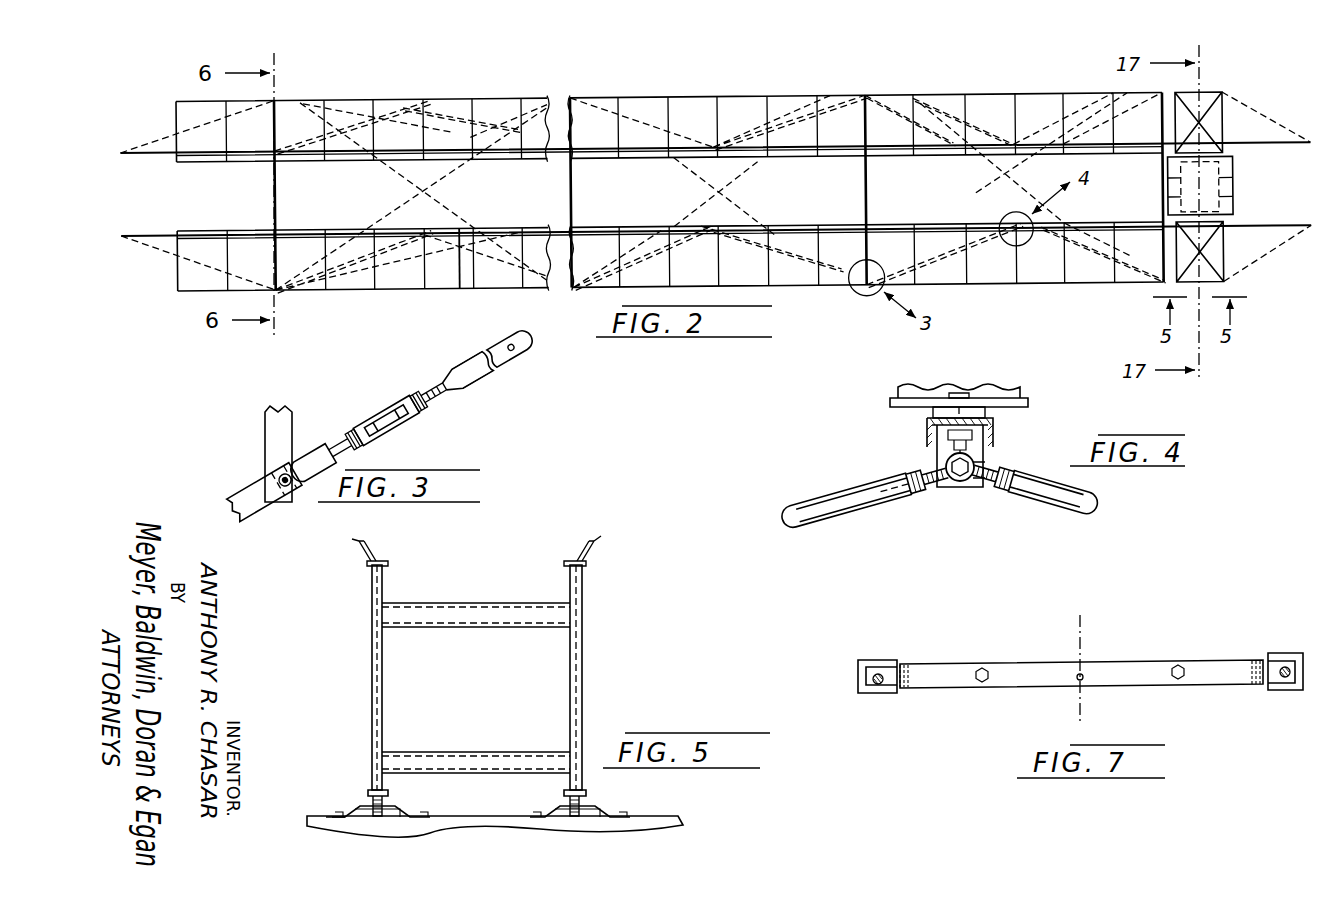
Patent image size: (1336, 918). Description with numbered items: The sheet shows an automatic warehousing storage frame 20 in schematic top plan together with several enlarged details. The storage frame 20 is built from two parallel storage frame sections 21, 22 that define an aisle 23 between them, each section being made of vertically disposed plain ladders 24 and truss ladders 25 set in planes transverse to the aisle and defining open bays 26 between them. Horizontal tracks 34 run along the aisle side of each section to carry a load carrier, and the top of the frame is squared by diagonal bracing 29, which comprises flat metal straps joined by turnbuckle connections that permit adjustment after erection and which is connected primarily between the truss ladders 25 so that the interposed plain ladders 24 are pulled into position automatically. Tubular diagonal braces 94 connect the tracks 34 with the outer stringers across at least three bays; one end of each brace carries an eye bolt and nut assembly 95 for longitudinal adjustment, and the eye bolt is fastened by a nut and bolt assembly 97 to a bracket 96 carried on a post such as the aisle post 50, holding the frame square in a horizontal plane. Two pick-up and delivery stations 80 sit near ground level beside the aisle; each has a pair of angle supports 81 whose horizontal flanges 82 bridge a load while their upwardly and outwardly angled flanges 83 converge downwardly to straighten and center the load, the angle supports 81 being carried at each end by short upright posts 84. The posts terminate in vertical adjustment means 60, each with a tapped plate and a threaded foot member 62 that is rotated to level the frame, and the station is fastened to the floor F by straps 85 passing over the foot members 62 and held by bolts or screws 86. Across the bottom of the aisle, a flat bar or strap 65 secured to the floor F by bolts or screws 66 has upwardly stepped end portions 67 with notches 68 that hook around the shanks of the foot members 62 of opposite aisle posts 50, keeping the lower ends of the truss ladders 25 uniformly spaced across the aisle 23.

In FIG. 2, the storage frame 20 is at (987, 88).
In FIG. 2, the storage frame section 21 is at (688, 100).
In FIG. 2, the storage frame section 22 is at (830, 287).
In FIG. 2, the aisle 23 is at (777, 190).
In FIG. 2, the ladder 24 is at (433, 118).
In FIG. 2, the truss ladder 25 is at (277, 106).
In FIG. 2, the open bay 26 is at (460, 288).
In FIG. 2, the diagonal bracing 29 is at (395, 210).
In FIG. 2, the track 34 is at (503, 233).
In FIG. 4, the track 34 is at (988, 394).
In FIG. 2, the pick-up and delivery station 80 is at (1226, 108).
In FIG. 5, the pick-up and delivery station 80 is at (598, 618).
In FIG. 2, the diagonal brace 94 is at (430, 240).
In FIG. 4, the diagonal brace 94 is at (1065, 502).
In FIG. 4, the aisle post 50 is at (927, 423).
In FIG. 4, the eye bolt and nut assembly 95 is at (1000, 472).
In FIG. 4, the bracket 96 is at (937, 449).
In FIG. 4, the nut and bolt assembly 97 is at (962, 483).
In FIG. 5, the vertical adjustment means 60 is at (365, 797).
In FIG. 5, the foot member 62 is at (381, 821).
In FIG. 7, the foot member 62 is at (858, 672).
In FIG. 5, the angle support 81 is at (356, 541).
In FIG. 5, the horizontal flange 82 is at (382, 562).
In FIG. 5, the angled flange 83 is at (363, 552).
In FIG. 5, the upright post 84 is at (372, 663).
In FIG. 5, the strap 85 is at (400, 807).
In FIG. 5, the bolt or screw 86 is at (330, 812).
In FIG. 5, the floor F is at (660, 817).
In FIG. 7, the flat metal bar or strap 65 is at (972, 672).
In FIG. 7, the bolt or screw 66 is at (1180, 664).
In FIG. 7, the upwardly stepped end portion 67 is at (886, 670).
In FIG. 7, the notch 68 is at (878, 686).